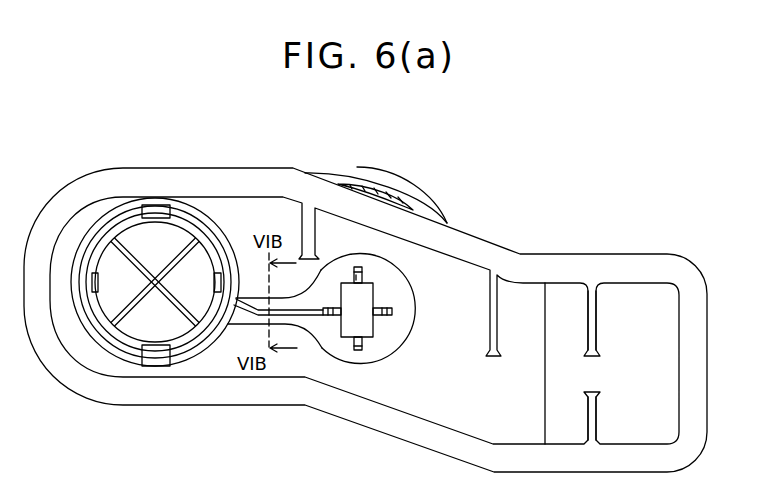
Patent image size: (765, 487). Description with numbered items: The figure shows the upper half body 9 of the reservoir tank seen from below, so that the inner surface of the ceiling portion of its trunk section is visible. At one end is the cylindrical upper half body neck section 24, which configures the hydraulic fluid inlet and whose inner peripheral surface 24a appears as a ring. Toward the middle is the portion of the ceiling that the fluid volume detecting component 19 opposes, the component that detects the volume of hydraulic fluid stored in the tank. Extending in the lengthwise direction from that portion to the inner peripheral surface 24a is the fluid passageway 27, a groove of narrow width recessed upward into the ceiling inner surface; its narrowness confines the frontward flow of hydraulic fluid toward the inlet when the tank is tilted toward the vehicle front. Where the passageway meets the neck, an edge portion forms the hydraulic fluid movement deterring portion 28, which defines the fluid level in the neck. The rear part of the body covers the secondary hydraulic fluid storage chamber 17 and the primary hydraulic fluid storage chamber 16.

The upper half body 9 is at (491, 240).
The primary hydraulic fluid storage chamber 16 is at (665, 393).
The secondary hydraulic fluid storage chamber 17 is at (537, 393).
The fluid volume detecting component 19 is at (400, 348).
The upper half body neck section 24 is at (106, 349).
The inner peripheral surface 24a is at (217, 250).
The fluid passageway 27 is at (257, 318).
The hydraulic fluid movement deterring portion 28 is at (240, 312).